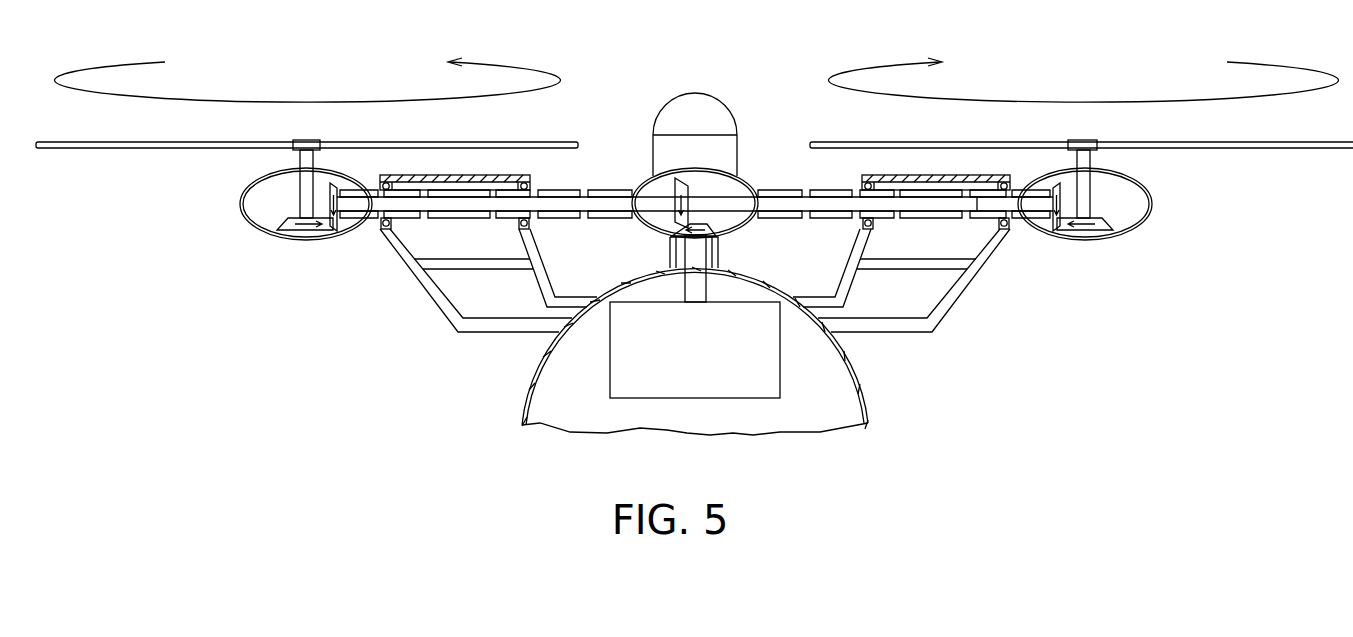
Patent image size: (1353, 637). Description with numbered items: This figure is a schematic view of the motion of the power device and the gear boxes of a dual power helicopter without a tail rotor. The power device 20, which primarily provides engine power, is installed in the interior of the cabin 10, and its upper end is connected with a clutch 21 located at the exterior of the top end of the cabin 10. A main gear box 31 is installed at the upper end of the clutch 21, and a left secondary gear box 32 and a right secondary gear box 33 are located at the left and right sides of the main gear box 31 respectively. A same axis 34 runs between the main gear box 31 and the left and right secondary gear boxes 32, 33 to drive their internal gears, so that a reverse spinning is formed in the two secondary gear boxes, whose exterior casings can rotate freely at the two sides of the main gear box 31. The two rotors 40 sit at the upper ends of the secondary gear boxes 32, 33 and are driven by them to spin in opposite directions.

The cabin 10 is at (563, 375).
The power device 20 is at (723, 388).
The clutch 21 is at (680, 252).
The main gear box 31 is at (727, 190).
The left secondary gear box 32 is at (257, 202).
The right secondary gear box 33 is at (1128, 213).
The same axis 34 is at (610, 205).
The rotors 40 is at (215, 143).